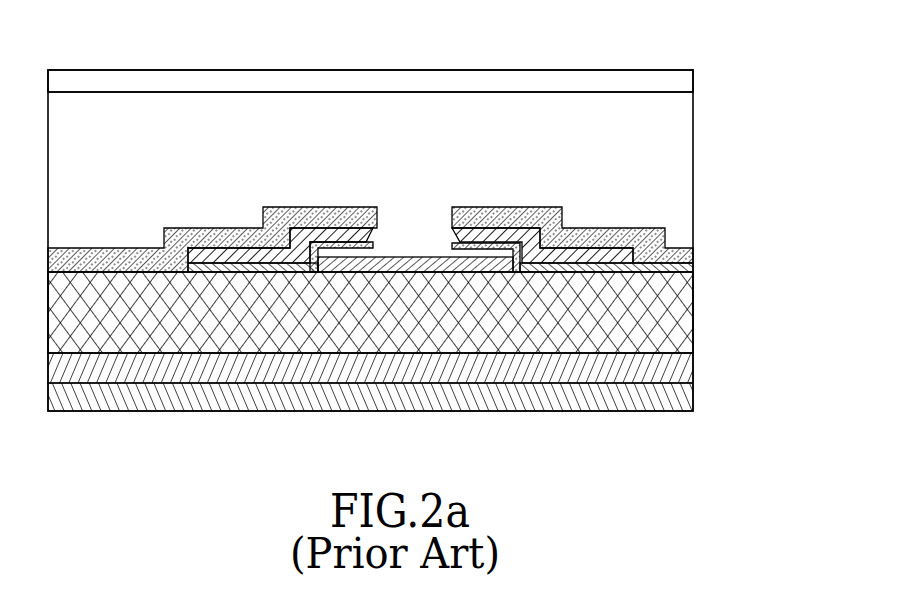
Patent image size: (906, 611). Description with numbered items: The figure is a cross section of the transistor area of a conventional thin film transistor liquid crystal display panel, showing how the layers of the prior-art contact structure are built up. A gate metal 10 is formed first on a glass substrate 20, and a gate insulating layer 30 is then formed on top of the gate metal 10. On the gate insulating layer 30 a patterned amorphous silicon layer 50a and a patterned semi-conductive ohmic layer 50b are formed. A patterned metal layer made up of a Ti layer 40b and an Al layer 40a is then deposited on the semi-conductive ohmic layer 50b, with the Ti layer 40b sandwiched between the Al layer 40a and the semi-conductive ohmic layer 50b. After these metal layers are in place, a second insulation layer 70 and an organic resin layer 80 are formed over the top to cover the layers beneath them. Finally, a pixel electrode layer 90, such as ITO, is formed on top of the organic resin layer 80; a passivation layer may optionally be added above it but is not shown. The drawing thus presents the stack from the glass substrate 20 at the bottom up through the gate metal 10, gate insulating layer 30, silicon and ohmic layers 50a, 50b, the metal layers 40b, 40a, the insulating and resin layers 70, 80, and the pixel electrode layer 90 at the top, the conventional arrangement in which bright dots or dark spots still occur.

The gate metal 10 is at (683, 362).
The glass substrate 20 is at (680, 397).
The gate insulating layer 30 is at (677, 311).
The Al layer 40a is at (640, 249).
The Ti layer 40b is at (690, 258).
The patterned amorphous silicon layer 50a is at (392, 257).
The patterned semi-conductive ohmic layer 50b is at (450, 254).
The second insulation layer 70 is at (543, 228).
The organic resin layer 80 is at (683, 158).
The pixel electrode layer 90 is at (650, 70).